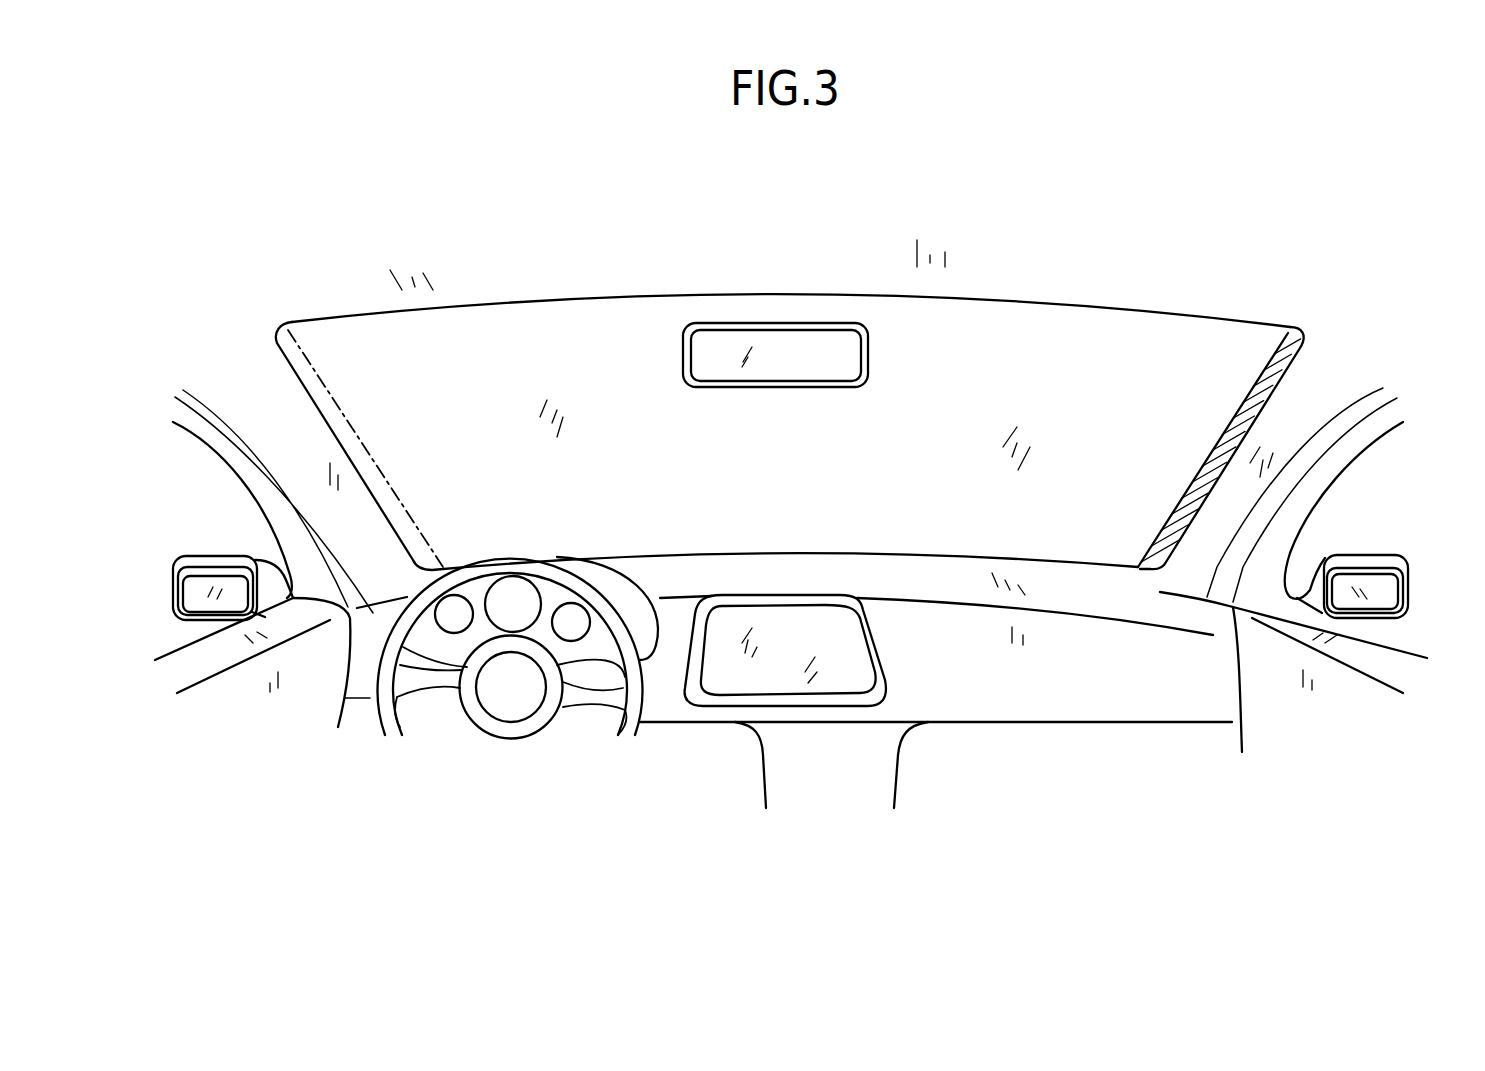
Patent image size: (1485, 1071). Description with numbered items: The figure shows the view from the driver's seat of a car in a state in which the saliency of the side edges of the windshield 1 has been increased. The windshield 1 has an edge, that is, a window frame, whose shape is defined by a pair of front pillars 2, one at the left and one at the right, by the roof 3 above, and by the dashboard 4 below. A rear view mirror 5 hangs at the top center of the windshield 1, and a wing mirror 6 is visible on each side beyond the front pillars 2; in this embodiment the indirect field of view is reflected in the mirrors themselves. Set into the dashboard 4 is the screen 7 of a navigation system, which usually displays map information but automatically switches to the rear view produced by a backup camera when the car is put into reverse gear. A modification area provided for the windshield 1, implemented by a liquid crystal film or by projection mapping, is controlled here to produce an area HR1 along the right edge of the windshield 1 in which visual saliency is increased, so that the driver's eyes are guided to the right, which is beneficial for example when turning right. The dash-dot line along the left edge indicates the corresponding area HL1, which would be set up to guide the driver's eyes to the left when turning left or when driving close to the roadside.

The windshield 1 is at (573, 324).
The front pillars 2 is at (295, 440).
The roof 3 is at (815, 263).
The dashboard 4 is at (930, 583).
The rear view mirror 5 is at (728, 352).
The wing mirror 6 is at (192, 594).
The screen of a navigation system 7 is at (795, 620).
The area HL1 is at (331, 418).
The area HR1 is at (1228, 432).